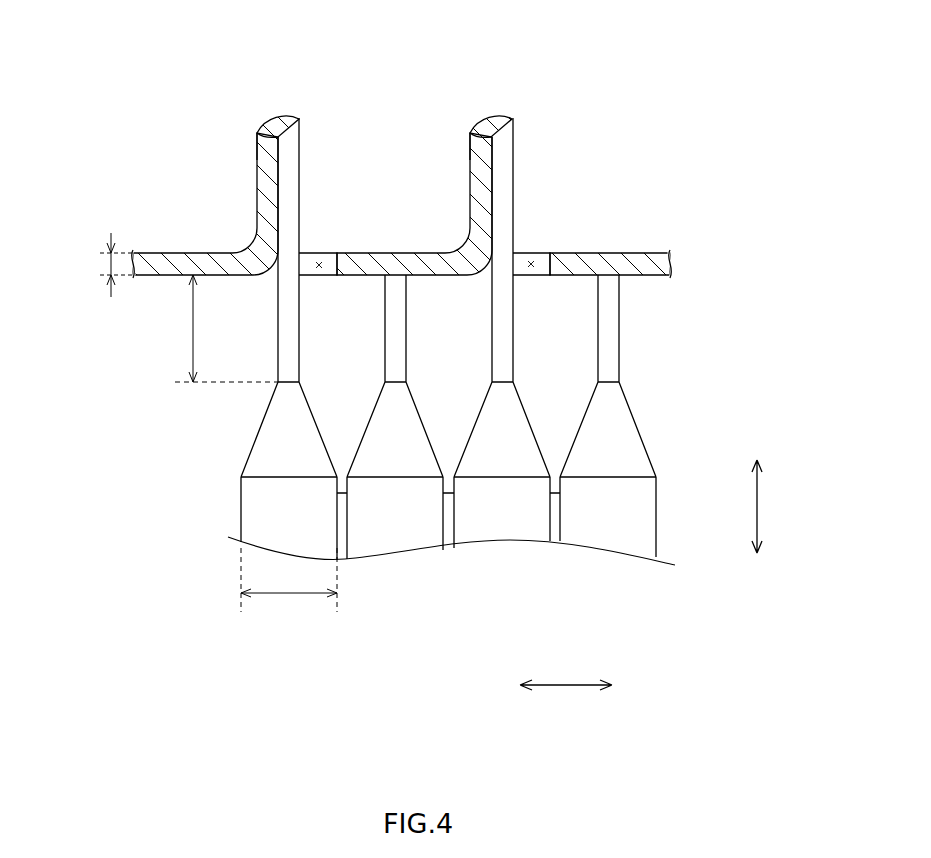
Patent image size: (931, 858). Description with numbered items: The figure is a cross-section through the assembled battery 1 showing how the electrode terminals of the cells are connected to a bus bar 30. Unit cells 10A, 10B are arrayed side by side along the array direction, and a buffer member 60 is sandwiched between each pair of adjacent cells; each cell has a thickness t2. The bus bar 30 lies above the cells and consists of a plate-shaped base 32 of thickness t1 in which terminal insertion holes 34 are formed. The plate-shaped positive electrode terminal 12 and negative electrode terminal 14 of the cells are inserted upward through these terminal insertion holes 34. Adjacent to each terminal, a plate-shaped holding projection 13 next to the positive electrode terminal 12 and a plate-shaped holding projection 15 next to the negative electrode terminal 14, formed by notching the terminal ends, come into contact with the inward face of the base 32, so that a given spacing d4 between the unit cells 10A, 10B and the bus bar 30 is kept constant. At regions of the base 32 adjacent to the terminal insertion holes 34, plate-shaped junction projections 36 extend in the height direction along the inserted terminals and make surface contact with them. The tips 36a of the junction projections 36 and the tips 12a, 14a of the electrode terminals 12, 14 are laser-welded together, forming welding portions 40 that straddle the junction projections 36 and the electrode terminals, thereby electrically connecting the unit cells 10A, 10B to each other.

The assembled battery 1 is at (53, 30).
The bus bar 30 is at (594, 247).
The base 32 is at (643, 253).
The terminal insertion hole 34 is at (320, 258).
The junction projection 36 is at (258, 180).
The tip of junction projection 36a is at (258, 132).
The welding portion 40 is at (273, 125).
The positive electrode terminal 12 is at (513, 321).
The tip of positive electrode terminal 12a is at (514, 122).
The holding projection 13 is at (619, 321).
The negative electrode terminal 14 is at (300, 321).
The tip of negative electrode terminal 14a is at (300, 122).
The holding projection 15 is at (406, 321).
The unit cell 10A is at (243, 508).
The unit cell 10B is at (397, 540).
The buffer member 60 is at (555, 540).
The thickness of the base t1 is at (102, 265).
The spacing between unit cells and bus bars d4 is at (215, 328).
The thickness of the unit cells t2 is at (289, 587).